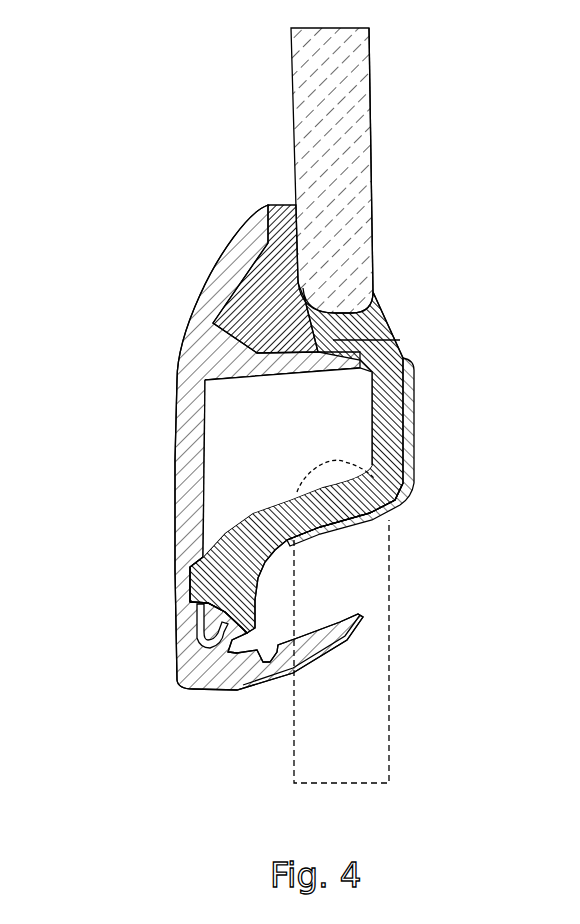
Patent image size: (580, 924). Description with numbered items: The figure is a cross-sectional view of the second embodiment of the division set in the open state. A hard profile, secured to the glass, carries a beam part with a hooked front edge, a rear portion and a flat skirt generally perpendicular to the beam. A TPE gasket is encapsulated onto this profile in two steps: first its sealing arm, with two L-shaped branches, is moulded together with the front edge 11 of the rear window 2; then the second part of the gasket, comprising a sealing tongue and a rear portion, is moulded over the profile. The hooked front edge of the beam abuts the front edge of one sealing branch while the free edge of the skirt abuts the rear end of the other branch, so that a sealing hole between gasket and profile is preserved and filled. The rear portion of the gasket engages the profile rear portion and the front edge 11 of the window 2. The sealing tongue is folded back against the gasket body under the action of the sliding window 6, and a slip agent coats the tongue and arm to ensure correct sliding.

The rear window 2 is at (357, 58).
The front edge of window 11 is at (373, 258).
The window 6 is at (312, 760).